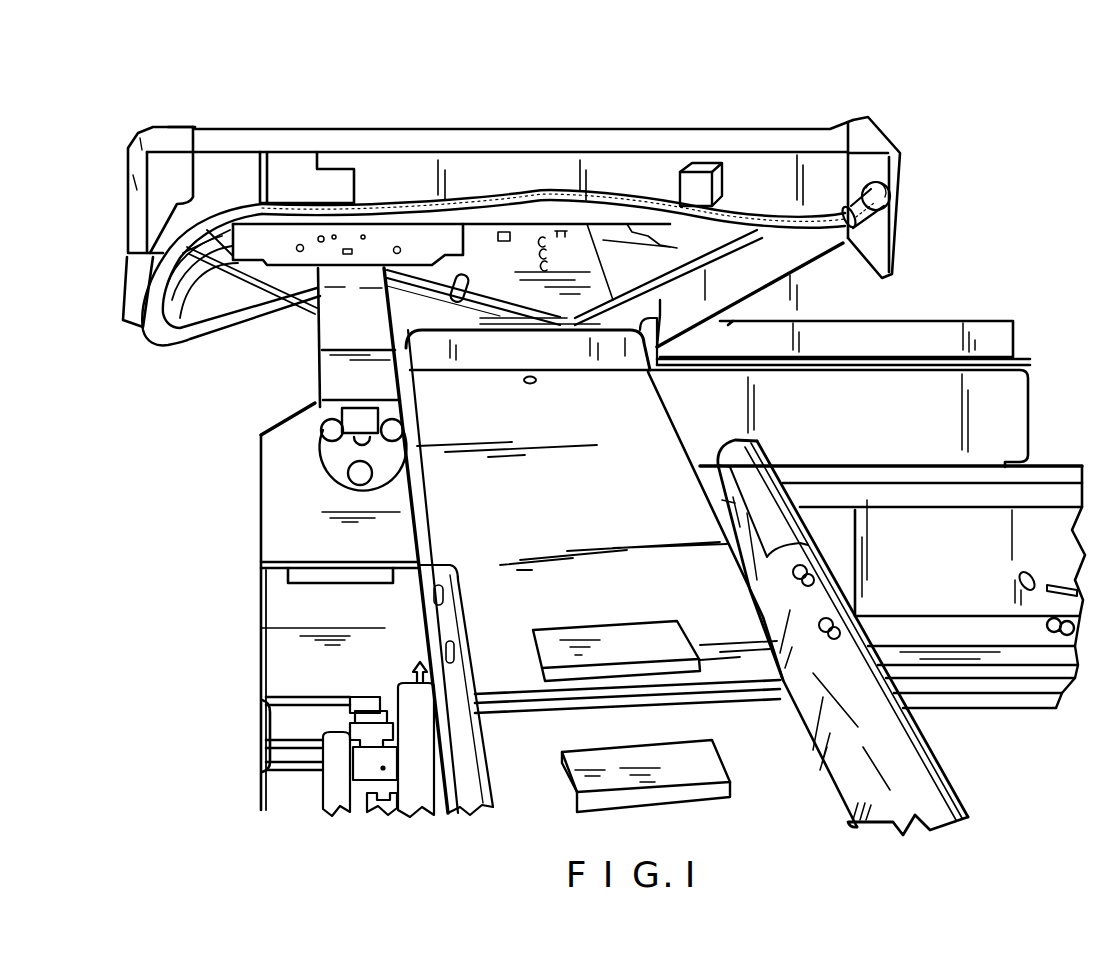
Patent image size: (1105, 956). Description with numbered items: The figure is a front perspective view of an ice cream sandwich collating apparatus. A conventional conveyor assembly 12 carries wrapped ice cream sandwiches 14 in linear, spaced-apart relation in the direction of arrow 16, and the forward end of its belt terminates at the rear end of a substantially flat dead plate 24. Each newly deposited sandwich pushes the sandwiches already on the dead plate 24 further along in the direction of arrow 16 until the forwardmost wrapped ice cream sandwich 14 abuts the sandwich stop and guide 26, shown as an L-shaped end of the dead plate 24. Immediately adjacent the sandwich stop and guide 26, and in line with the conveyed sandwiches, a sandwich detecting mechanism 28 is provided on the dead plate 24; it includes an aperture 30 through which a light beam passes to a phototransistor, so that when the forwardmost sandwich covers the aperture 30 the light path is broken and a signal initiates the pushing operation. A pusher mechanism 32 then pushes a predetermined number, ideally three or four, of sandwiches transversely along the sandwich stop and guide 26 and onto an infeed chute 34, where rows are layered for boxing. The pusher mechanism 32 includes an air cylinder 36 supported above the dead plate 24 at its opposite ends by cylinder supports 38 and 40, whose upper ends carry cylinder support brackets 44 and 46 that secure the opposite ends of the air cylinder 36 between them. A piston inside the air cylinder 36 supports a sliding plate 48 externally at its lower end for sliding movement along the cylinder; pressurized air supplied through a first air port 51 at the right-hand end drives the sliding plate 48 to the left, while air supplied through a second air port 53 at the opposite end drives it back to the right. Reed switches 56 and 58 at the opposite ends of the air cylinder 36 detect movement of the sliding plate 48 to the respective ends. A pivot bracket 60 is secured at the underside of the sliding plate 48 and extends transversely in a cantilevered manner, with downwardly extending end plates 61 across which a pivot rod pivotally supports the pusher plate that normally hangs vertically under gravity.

The conveyor assembly 12 is at (790, 793).
The wrapped ice cream sandwiches 14 is at (580, 632).
The arrow 16 is at (515, 748).
The dead plate 24 is at (652, 430).
The sandwich stop and guide 26 is at (603, 355).
The sandwich detecting mechanism 28 is at (516, 380).
The aperture 30 is at (527, 385).
The pusher mechanism 32 is at (330, 350).
The infeed chute 34 is at (845, 467).
The air cylinder 36 is at (508, 140).
The cylinder support 38 is at (282, 276).
The cylinder support 40 is at (770, 247).
The cylinder support bracket 44 is at (138, 170).
The cylinder support bracket 46 is at (857, 119).
The sliding plate 48 is at (412, 232).
The first air port 51 is at (882, 186).
The second air port 53 is at (180, 126).
The reed switch 56 is at (277, 168).
The reed switch 58 is at (692, 183).
The pivot bracket 60 is at (322, 320).
The end plates 61 is at (340, 465).